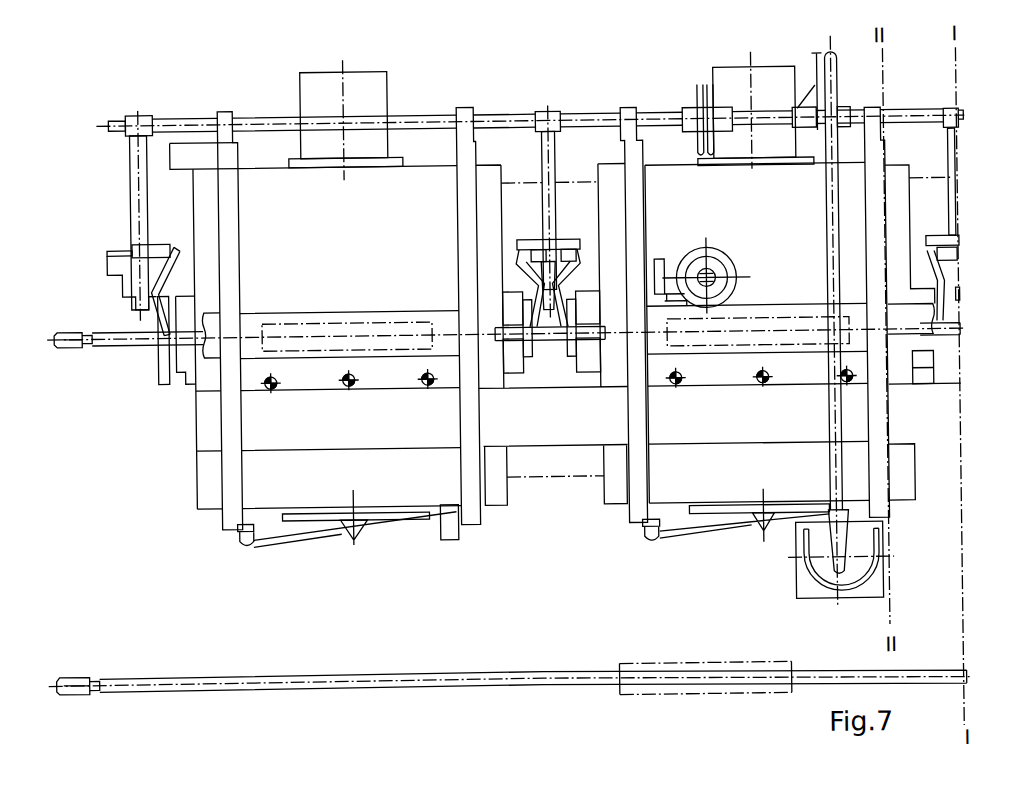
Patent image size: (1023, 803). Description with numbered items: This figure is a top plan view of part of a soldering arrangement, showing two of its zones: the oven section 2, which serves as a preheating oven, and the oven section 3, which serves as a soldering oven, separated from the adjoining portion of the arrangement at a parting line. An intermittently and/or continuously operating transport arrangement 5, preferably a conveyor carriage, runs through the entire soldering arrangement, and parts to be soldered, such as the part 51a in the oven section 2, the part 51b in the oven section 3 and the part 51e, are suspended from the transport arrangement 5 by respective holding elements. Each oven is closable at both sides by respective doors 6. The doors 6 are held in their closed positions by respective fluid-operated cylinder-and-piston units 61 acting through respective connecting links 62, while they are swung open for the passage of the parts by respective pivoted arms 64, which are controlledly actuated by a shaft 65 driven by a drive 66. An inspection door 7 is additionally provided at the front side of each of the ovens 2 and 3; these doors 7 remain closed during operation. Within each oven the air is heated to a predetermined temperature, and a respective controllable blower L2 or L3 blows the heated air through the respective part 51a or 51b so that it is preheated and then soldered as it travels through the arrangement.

The oven section 2 is at (337, 224).
The oven section 3 is at (747, 226).
The transport arrangement 5 is at (553, 348).
The door 6 is at (186, 371).
The inspection door 7 is at (406, 516).
The part to be soldered 51a is at (389, 328).
The part to be soldered 51b is at (760, 328).
The part to be soldered 51e is at (657, 694).
The fluid-operated cylinder-and-piston unit 61 is at (135, 247).
The connecting link 62 is at (183, 252).
The pivoted arm 64 is at (149, 142).
The shaft 65 is at (666, 114).
The drive 66 is at (815, 550).
The controllable blower L2 is at (366, 88).
The controllable blower L3 is at (772, 83).